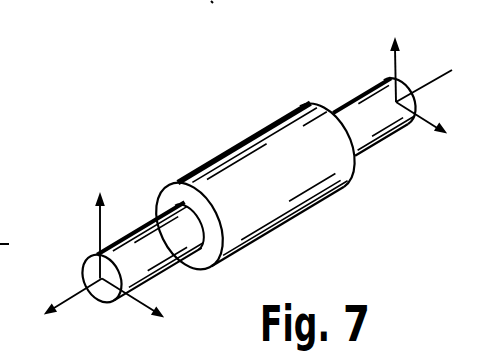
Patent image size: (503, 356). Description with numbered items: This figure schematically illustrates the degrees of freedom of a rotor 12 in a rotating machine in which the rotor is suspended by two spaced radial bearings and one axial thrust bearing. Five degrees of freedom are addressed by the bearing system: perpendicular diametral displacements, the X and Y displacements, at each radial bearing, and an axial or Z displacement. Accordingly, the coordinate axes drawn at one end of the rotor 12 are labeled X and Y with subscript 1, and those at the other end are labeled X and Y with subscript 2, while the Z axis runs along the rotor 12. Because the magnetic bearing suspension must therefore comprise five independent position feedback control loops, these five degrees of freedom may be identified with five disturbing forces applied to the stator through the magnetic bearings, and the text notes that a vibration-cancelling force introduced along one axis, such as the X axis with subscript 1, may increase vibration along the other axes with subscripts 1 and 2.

The rotor 12 is at (287, 188).
The first coordinate system (X1, Y1, Z) 1 is at (110, 254).
The second coordinate system (X2, Y2) 2 is at (433, 87).